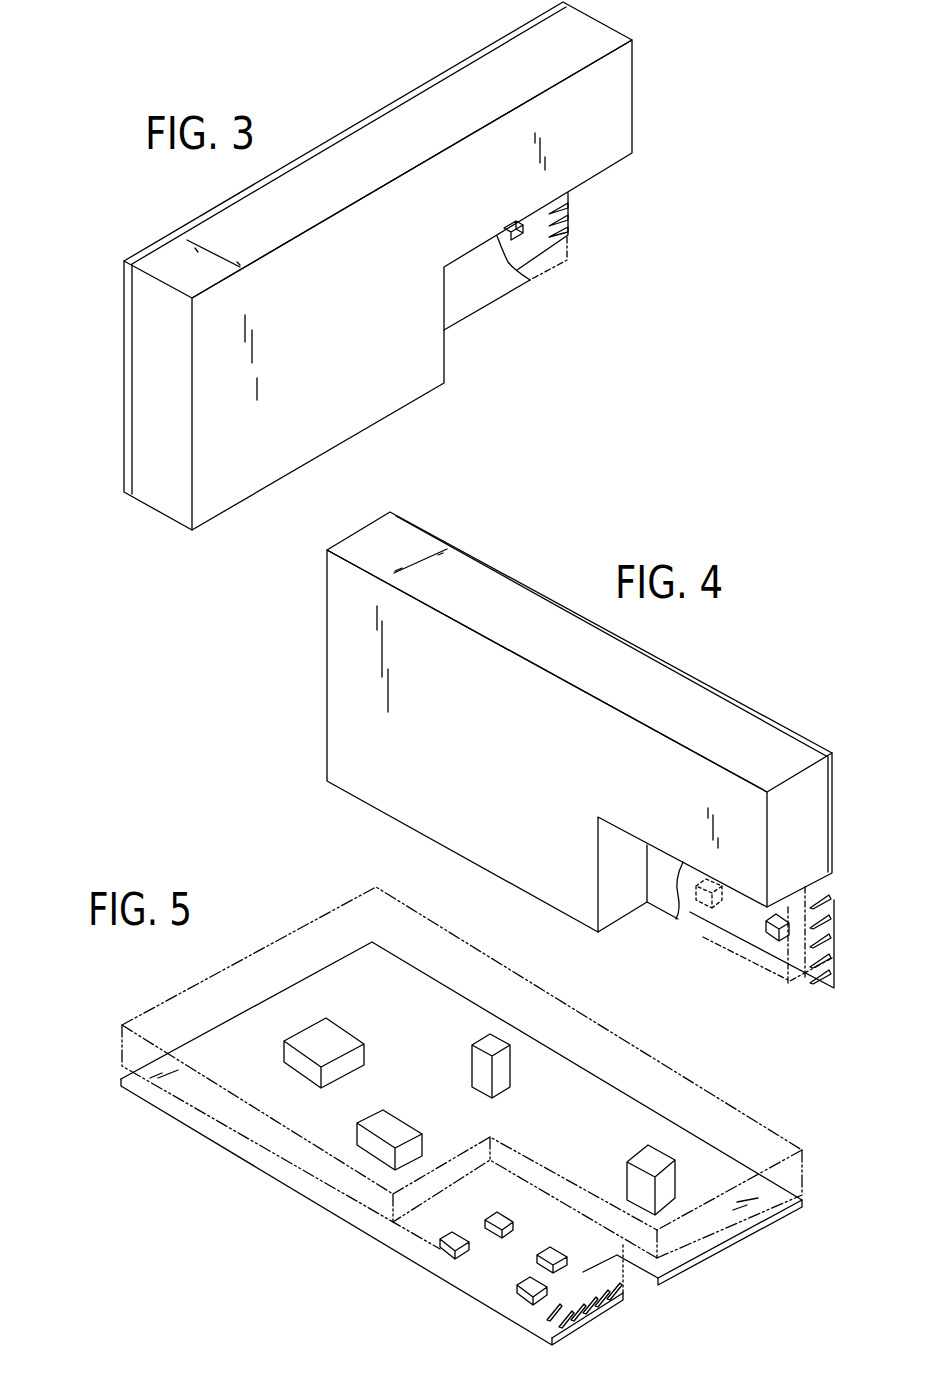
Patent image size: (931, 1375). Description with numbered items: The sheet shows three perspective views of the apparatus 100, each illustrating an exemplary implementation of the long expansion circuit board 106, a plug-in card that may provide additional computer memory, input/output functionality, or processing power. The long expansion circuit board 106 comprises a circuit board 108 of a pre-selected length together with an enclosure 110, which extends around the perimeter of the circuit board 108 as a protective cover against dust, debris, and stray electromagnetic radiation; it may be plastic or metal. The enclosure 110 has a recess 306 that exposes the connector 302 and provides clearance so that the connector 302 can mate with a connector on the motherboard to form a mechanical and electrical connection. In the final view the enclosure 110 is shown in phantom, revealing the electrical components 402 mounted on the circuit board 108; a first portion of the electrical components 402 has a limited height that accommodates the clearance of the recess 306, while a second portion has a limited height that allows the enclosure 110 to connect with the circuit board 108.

In FIG. 3, the apparatus 100 is at (133, 229).
In FIG. 4, the apparatus 100 is at (571, 560).
In FIG. 5, the apparatus 100 is at (331, 897).
In FIG. 3, the long expansion circuit board 106 is at (456, 90).
In FIG. 4, the long expansion circuit board 106 is at (346, 688).
In FIG. 5, the long expansion circuit board 106 is at (125, 1146).
In FIG. 3, the circuit board 108 is at (126, 376).
In FIG. 4, the circuit board 108 is at (728, 690).
In FIG. 5, the circuit board 108 is at (262, 1173).
In FIG. 3, the enclosure 110 is at (308, 456).
In FIG. 4, the enclosure 110 is at (425, 804).
In FIG. 5, the enclosure 110 is at (184, 989).
In FIG. 3, the connector 302 is at (571, 197).
In FIG. 4, the connector 302 is at (762, 941).
In FIG. 5, the connector 302 is at (611, 1327).
In FIG. 3, the recess 306 is at (600, 272).
In FIG. 4, the recess 306 is at (755, 1006).
In FIG. 5, the recess 306 is at (430, 1223).
In FIG. 4, the electrical components 402 is at (770, 930).
In FIG. 5, the electrical components 402 is at (627, 1175).